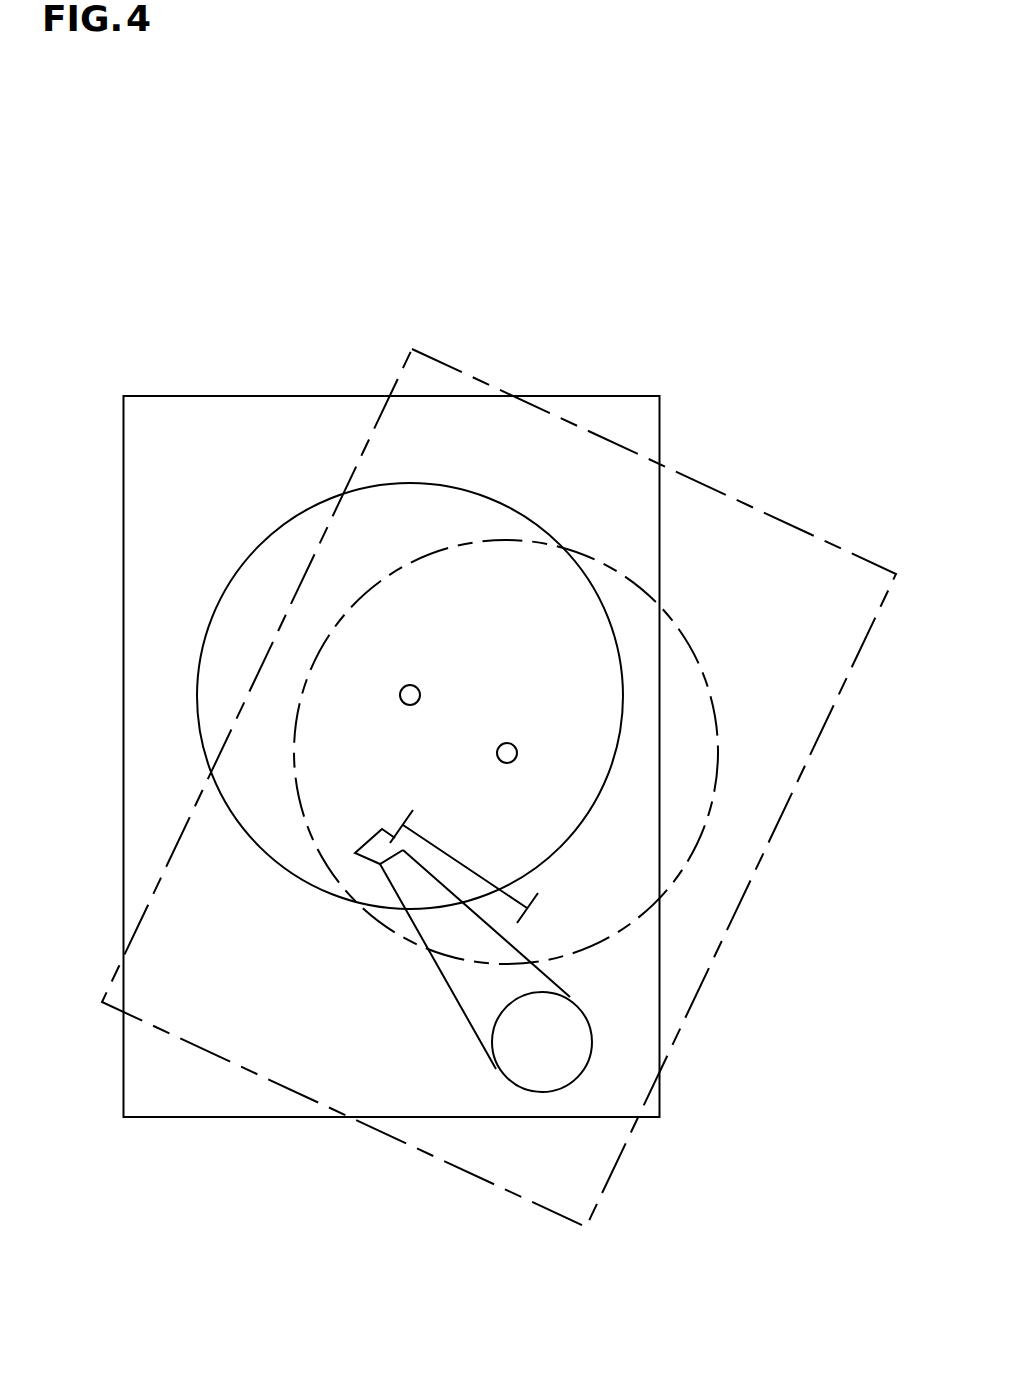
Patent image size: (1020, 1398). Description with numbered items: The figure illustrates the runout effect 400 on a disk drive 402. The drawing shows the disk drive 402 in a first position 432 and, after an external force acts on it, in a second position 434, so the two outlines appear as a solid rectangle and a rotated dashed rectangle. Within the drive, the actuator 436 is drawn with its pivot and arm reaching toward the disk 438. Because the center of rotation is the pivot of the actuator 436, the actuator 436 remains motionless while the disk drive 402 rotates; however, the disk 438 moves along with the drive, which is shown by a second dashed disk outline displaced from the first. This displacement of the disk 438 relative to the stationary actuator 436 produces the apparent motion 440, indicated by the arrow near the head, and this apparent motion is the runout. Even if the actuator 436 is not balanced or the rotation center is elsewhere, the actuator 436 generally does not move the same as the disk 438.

The runout effect 400 is at (788, 427).
The disk drive 402 is at (123, 790).
The first position 432 is at (595, 396).
The second position 434 is at (752, 507).
The actuator 436 is at (520, 1057).
The disk 438 is at (233, 628).
The apparent motion 440 is at (465, 865).